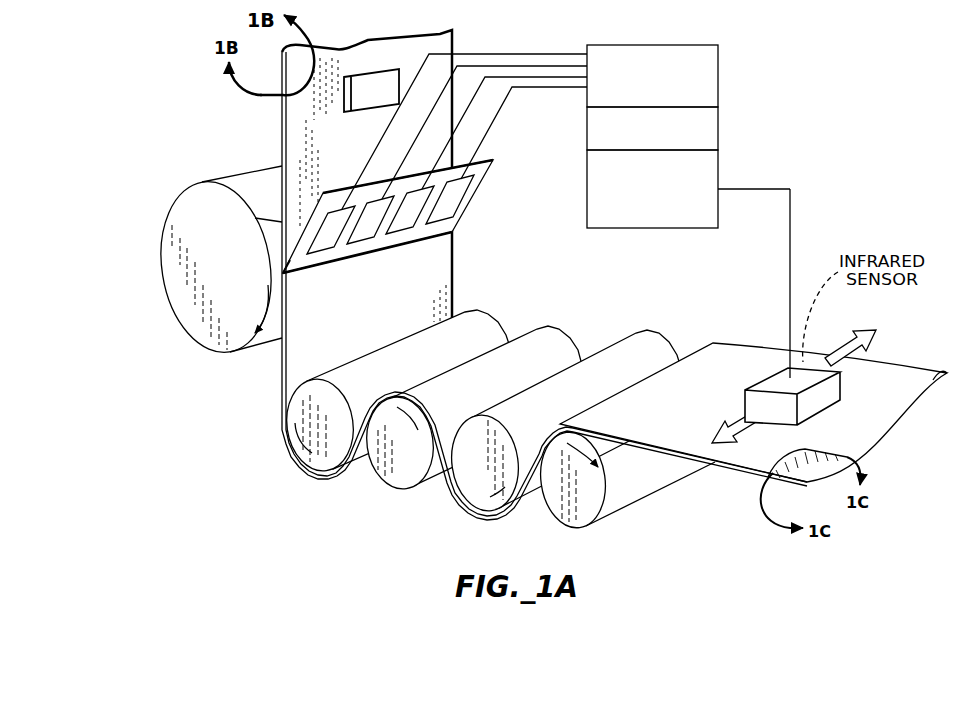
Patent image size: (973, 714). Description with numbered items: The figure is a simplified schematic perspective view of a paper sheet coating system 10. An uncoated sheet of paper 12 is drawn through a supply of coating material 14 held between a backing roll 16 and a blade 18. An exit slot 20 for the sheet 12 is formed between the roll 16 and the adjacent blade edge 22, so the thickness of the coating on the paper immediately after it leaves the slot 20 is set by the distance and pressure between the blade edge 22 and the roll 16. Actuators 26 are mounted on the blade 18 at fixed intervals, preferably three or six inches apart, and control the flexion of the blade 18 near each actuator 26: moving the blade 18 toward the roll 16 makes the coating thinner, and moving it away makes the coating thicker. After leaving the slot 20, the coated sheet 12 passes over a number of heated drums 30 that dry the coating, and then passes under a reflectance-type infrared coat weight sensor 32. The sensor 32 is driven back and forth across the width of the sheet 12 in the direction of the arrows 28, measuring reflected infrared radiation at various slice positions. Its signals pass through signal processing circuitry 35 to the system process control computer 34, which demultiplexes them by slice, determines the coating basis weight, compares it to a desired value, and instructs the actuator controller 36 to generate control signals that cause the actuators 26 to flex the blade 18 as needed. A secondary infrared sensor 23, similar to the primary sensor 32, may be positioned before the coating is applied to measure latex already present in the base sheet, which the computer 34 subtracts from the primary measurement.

The paper sheet coating system 10 is at (278, 498).
The sheet of paper 12 is at (408, 44).
The coating material 14 is at (272, 203).
The backing roll 16 is at (203, 342).
The blade 18 is at (387, 240).
The exit slot 20 is at (290, 222).
The blade edge 22 is at (287, 288).
The secondary infrared sensor 23 is at (378, 110).
The actuators 26 is at (456, 197).
The arrows 28 is at (740, 417).
The heated drums 30 is at (614, 418).
The reflectance-type infrared coat weight sensor 32 is at (823, 397).
The system process control computer 34 is at (718, 128).
The signal processing circuitry 35 is at (650, 228).
The actuator controller 36 is at (718, 70).